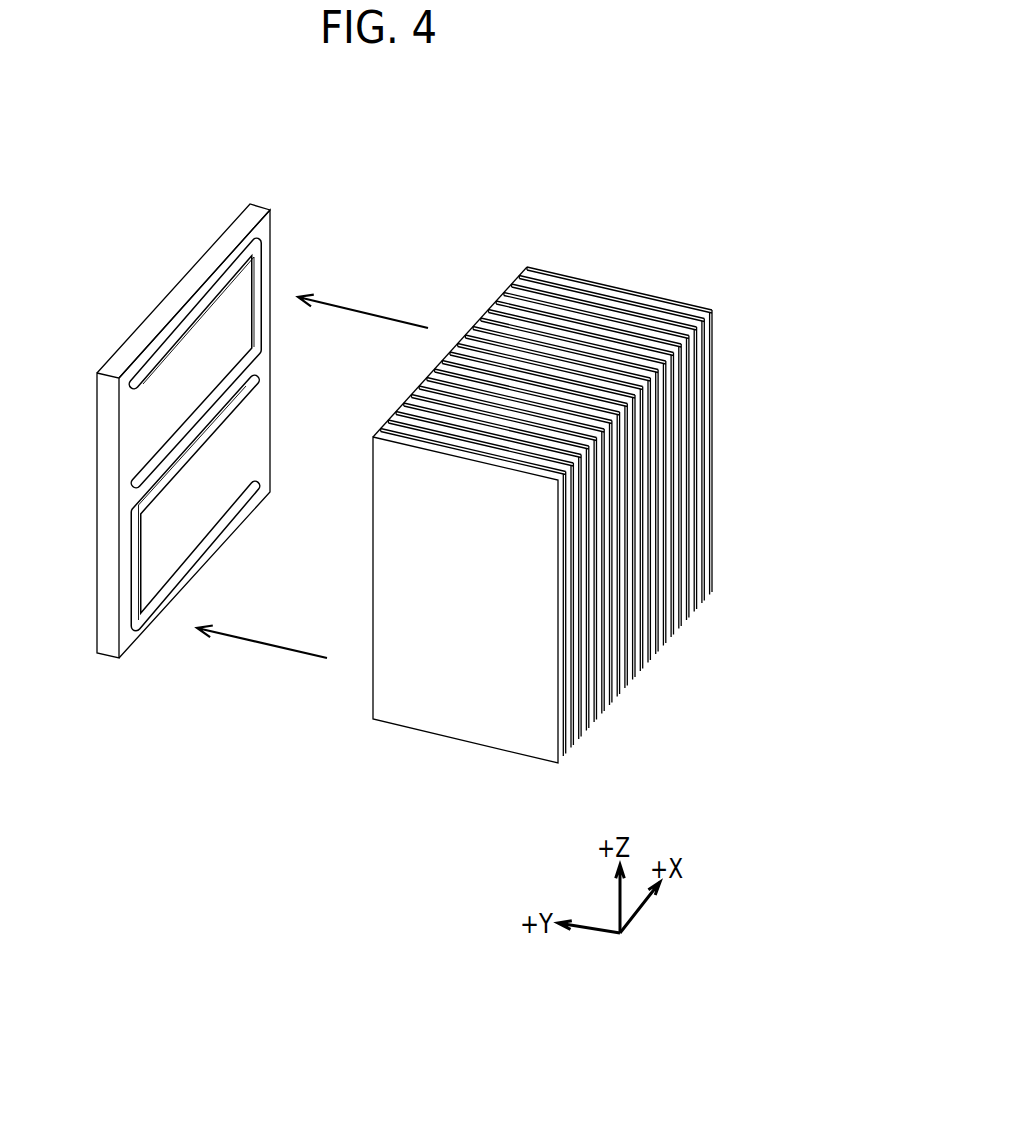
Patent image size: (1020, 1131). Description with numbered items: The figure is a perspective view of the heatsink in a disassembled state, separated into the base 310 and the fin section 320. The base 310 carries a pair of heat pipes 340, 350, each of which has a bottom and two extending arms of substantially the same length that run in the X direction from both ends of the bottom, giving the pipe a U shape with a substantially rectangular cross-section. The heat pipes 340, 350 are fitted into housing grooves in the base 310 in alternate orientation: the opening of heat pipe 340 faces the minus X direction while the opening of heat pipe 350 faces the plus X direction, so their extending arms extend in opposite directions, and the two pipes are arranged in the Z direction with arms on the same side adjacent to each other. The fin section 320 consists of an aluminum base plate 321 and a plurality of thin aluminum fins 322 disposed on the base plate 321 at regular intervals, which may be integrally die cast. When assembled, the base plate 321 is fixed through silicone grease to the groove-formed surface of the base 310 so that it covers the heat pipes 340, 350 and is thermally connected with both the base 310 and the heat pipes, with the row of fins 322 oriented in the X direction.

The base 310 is at (145, 333).
The fin section 320 is at (555, 456).
The base plate 321 is at (493, 298).
The fins 322 is at (698, 313).
The heat pipe 340 is at (253, 263).
The heat pipe 350 is at (135, 617).